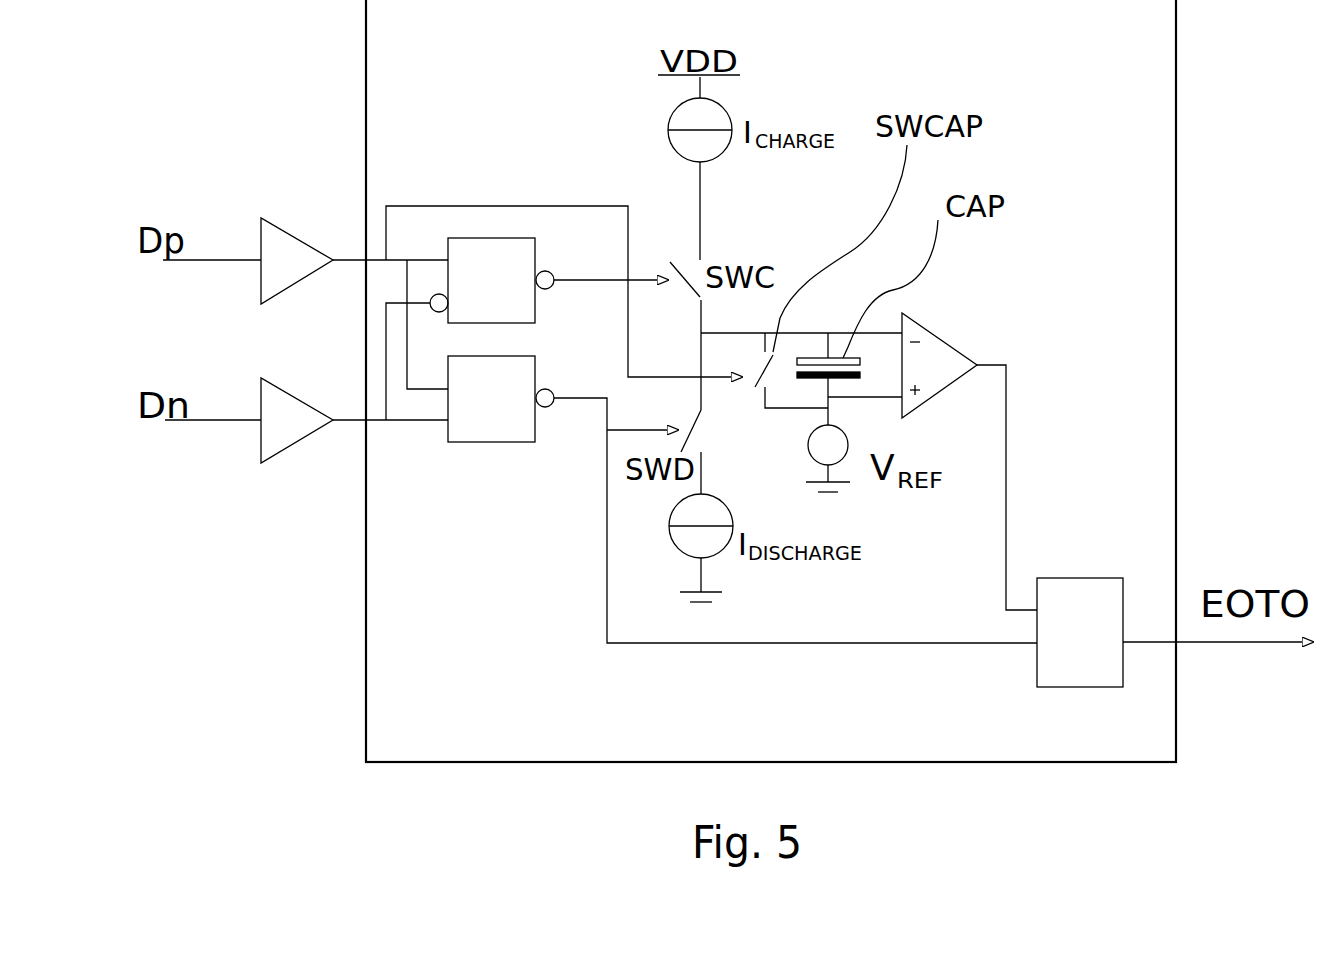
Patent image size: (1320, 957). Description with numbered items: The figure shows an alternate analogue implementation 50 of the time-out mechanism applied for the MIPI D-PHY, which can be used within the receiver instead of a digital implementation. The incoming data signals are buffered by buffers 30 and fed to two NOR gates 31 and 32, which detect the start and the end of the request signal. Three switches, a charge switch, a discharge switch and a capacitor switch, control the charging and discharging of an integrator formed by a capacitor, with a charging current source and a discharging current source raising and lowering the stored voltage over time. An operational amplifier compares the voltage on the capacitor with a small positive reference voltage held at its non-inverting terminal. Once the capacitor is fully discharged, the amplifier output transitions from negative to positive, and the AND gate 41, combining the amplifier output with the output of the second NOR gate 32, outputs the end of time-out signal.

The analogue implementation 50 is at (460, 62).
The buffers 30 is at (302, 282).
The NOR gate 31 is at (488, 238).
The NOR gate 32 is at (490, 442).
The AND gate 41 is at (1058, 578).